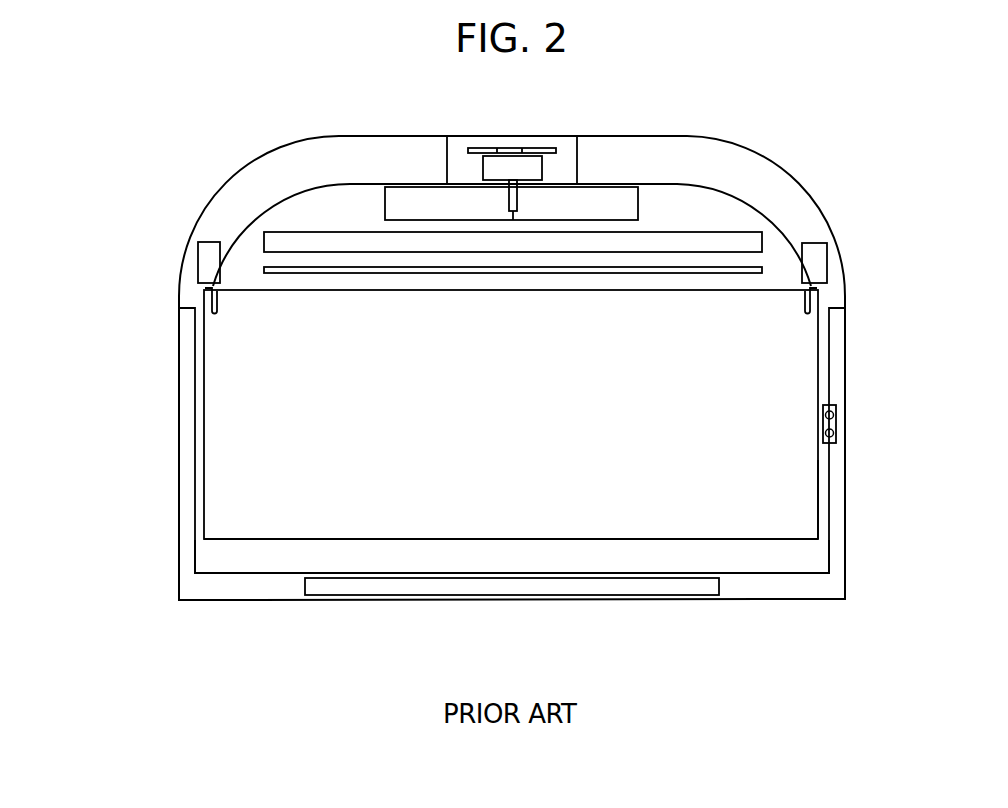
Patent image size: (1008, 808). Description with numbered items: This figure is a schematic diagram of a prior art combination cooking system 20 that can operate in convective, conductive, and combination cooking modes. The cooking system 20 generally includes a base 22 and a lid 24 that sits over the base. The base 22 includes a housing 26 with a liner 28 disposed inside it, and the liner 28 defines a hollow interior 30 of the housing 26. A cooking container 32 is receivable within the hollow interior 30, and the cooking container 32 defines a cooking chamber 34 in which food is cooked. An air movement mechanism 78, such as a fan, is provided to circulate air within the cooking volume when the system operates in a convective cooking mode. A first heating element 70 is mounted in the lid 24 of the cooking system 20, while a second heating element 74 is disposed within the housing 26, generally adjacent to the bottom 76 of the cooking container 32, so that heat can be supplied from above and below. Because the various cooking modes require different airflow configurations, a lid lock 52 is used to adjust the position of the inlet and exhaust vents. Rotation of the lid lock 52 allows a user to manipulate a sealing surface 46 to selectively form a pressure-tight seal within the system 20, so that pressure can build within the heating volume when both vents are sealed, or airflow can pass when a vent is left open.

The cooking system 20 is at (102, 128).
The base 22 is at (145, 395).
The lid 24 is at (153, 196).
The housing 26 is at (179, 460).
The liner 28 is at (194, 555).
The hollow interior 30 is at (826, 558).
The cooking container 32 is at (820, 500).
The cooking chamber 34 is at (527, 425).
The sealing surface 46 is at (202, 285).
The lid lock 52 is at (823, 253).
The first heating element 70 is at (347, 243).
The second heating element 74 is at (676, 588).
The bottom 76 is at (303, 540).
The air movement mechanism 78 is at (634, 205).